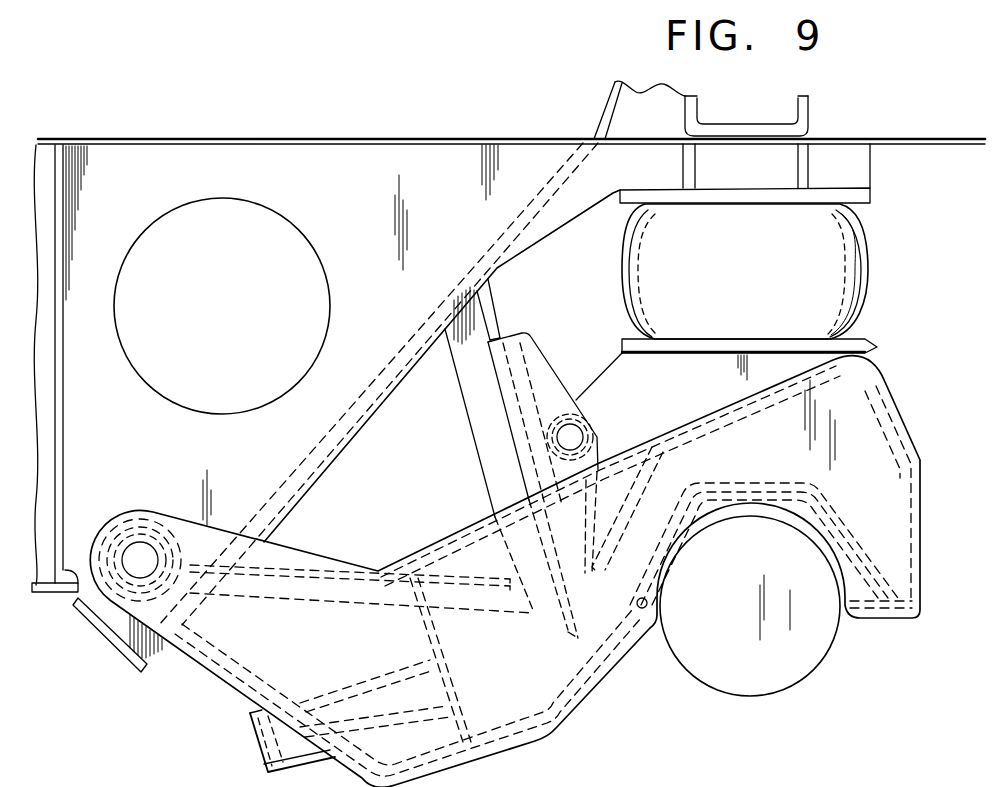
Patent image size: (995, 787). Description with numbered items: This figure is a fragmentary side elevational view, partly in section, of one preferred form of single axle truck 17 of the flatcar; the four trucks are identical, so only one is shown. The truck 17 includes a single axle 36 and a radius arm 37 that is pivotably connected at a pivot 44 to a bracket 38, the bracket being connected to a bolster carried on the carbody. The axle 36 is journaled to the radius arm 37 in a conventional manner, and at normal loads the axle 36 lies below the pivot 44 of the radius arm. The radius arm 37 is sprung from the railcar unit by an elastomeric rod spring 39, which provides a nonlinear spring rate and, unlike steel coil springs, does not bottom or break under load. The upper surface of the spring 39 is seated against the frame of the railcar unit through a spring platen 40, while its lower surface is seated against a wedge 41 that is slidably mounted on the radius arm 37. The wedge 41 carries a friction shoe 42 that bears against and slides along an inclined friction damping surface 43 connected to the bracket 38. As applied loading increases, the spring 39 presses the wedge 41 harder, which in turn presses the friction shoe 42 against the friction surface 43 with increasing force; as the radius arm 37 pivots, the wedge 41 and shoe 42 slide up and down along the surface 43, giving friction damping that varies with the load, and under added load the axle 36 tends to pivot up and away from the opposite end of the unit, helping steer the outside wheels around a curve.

The single axle truck 17 is at (646, 686).
The axle 36 is at (792, 663).
The radius arm 37 is at (515, 712).
The bracket 38 is at (352, 160).
The elastomeric rod spring 39 is at (837, 269).
The spring platen 40 is at (857, 203).
The wedge 41 is at (675, 402).
The friction shoe 42 is at (543, 367).
The inclined friction damping surface 43 is at (492, 318).
The pivot 44 is at (140, 553).